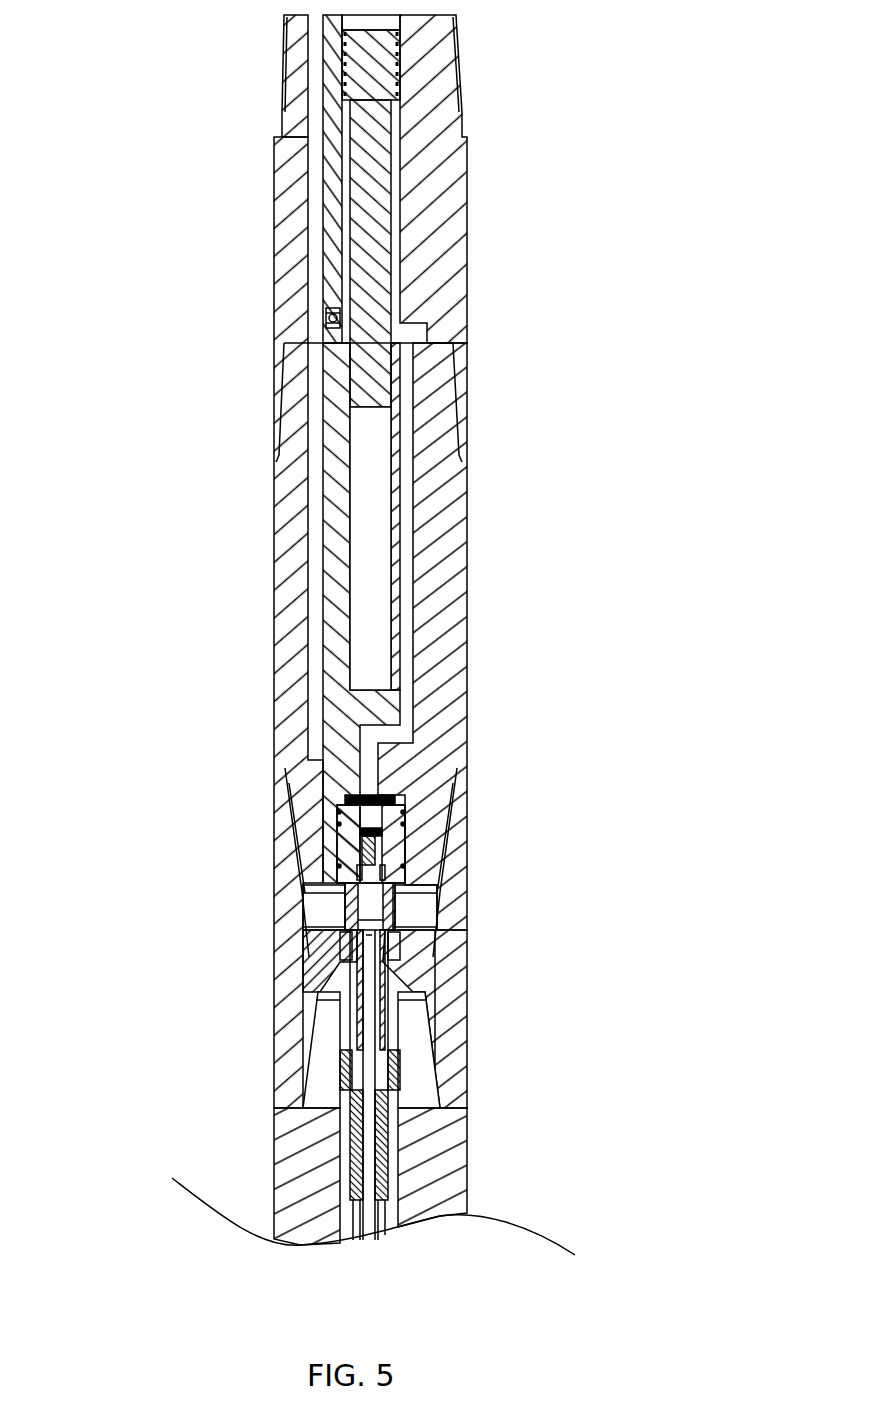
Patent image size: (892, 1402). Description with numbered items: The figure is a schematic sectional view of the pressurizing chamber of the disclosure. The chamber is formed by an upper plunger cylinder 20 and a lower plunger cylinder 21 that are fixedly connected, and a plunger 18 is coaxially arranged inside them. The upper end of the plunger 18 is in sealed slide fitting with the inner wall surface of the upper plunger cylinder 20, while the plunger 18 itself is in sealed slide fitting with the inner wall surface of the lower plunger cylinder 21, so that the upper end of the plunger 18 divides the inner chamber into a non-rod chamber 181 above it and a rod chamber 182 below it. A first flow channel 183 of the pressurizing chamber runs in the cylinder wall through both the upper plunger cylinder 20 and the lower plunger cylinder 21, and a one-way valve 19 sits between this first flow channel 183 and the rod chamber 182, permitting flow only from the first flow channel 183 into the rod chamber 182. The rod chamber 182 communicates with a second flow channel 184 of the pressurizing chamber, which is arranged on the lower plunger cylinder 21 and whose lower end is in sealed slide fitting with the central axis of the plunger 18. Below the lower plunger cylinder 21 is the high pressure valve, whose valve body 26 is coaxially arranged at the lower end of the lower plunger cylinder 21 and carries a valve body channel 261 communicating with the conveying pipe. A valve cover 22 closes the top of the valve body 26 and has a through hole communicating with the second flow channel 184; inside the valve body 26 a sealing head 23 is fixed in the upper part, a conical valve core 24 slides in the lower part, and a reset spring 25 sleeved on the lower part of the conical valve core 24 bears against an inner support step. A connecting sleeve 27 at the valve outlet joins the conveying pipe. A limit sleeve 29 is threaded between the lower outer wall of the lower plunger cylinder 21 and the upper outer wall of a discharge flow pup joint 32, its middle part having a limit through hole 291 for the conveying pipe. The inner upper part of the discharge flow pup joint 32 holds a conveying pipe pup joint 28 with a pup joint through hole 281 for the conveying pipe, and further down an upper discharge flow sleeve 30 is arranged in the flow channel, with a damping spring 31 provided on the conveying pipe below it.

The plunger 18 is at (373, 57).
The non-rod chamber 181 is at (392, 22).
The rod chamber 182 is at (345, 195).
The one-way valve 19 is at (323, 318).
The upper plunger cylinder 20 is at (438, 227).
The lower plunger cylinder 21 is at (437, 463).
The first flow channel of the pressurizing chamber 183 is at (315, 515).
The second flow channel of the pressurizing chamber 184 is at (403, 617).
The valve cover 22 is at (350, 795).
The sealing head 23 is at (388, 803).
The conical valve core 24 is at (345, 838).
The valve body channel 261 is at (362, 853).
The valve body 26 is at (345, 915).
The reset spring 25 is at (405, 867).
The limit through hole 291 is at (345, 955).
The connecting sleeve 27 is at (395, 940).
The conveying pipe pup joint 28 is at (340, 980).
The pup joint through hole 281 is at (350, 1053).
The limit sleeve 29 is at (450, 1052).
The upper discharge flow sleeve 30 is at (338, 1080).
The damping spring 31 is at (387, 1115).
The discharge flow pup joint 32 is at (310, 1132).